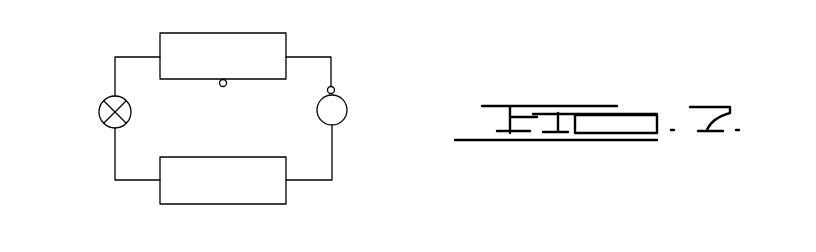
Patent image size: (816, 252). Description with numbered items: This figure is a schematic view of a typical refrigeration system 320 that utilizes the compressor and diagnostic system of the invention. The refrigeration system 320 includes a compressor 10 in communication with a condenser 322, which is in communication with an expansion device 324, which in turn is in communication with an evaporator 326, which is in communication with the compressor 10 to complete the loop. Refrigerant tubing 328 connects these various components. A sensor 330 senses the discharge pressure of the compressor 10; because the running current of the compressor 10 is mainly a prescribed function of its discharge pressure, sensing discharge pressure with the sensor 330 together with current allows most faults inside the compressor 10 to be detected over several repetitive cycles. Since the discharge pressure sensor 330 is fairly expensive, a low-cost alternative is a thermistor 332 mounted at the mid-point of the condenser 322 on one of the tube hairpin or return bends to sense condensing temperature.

The refrigeration system 320 is at (110, 202).
The condenser 322 is at (247, 68).
The expansion device 324 is at (99, 110).
The evaporator 326 is at (247, 192).
The refrigerant tubing 328 is at (334, 160).
The discharge pressure sensor 330 is at (335, 86).
The thermistor 332 is at (222, 87).
The compressor 10 is at (348, 114).